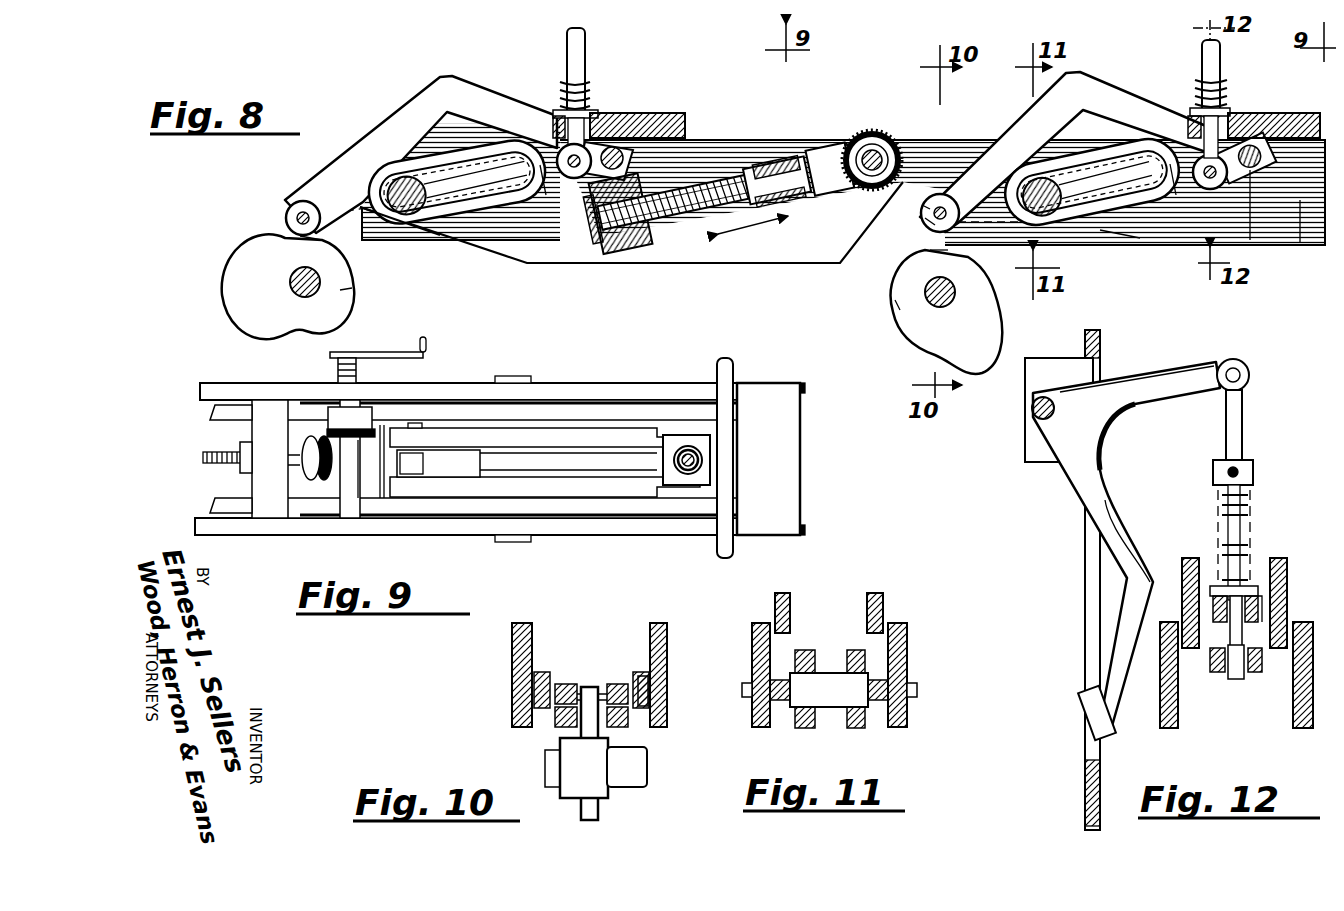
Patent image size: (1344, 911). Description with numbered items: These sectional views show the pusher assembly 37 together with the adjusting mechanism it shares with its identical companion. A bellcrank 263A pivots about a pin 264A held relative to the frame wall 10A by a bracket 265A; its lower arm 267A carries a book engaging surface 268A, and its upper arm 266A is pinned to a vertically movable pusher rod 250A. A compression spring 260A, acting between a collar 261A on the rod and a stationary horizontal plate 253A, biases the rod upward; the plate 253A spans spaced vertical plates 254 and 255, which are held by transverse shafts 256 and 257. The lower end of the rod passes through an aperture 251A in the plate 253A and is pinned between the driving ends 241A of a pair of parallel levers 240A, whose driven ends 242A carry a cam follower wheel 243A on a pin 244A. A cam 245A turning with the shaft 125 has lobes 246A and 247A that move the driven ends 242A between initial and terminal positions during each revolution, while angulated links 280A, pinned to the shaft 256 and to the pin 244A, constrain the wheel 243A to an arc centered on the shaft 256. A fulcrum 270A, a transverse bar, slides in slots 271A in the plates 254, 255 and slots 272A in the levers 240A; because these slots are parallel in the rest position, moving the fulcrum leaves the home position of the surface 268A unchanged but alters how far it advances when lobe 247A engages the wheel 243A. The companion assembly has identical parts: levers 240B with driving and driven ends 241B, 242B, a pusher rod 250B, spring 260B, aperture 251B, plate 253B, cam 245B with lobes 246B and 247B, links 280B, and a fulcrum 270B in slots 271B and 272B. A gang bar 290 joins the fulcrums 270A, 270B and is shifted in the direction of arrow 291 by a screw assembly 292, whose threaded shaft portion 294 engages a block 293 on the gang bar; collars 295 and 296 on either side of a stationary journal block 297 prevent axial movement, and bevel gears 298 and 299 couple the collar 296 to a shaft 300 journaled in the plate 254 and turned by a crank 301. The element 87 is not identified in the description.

In FIG. 12, the frame wall 10A is at (1093, 345).
In FIG. 12, the pusher assembly 37 is at (1065, 540).
In FIG. 8, the shaft bore 87 is at (291, 283).
In FIG. 8, the shaft 125 is at (945, 305).
In FIG. 10, the shaft 125 is at (640, 768).
In FIG. 8, the parallel levers 240A is at (1106, 220).
In FIG. 9, the parallel levers 240A is at (615, 477).
In FIG. 11, the parallel levers 240A is at (846, 728).
In FIG. 8, the parallel levers 240B is at (475, 215).
In FIG. 8, the driving ends 241A is at (1180, 200).
In FIG. 9, the driving ends 241A is at (688, 435).
In FIG. 12, the driving ends 241A is at (1245, 675).
In FIG. 8, the driving ends 241B is at (556, 202).
In FIG. 8, the driven ends 242A is at (940, 233).
In FIG. 9, the driven ends 242A is at (382, 518).
In FIG. 10, the driven ends 242A is at (592, 672).
In FIG. 8, the driven ends 242B is at (305, 202).
In FIG. 8, the cam follower wheel 243A is at (933, 215).
In FIG. 9, the cam follower wheel 243A is at (430, 463).
In FIG. 10, the cam follower wheel 243A is at (580, 725).
In FIG. 8, the pin 244A is at (925, 218).
In FIG. 9, the pin 244A is at (412, 423).
In FIG. 10, the pin 244A is at (650, 700).
In FIG. 8, the cam 245A is at (905, 308).
In FIG. 10, the cam 245A is at (600, 812).
In FIG. 8, the cam 245B is at (340, 290).
In FIG. 8, the cam lobe 246A is at (898, 242).
In FIG. 8, the cam lobe 246B is at (355, 266).
In FIG. 8, the cam lobe 247A is at (968, 375).
In FIG. 8, the cam lobe 247B is at (222, 288).
In FIG. 8, the pusher rod 250A is at (1222, 52).
In FIG. 9, the pusher rod 250A is at (703, 460).
In FIG. 12, the pusher rod 250A is at (1240, 430).
In FIG. 8, the pusher rod 250B is at (585, 60).
In FIG. 8, the aperture 251A is at (1232, 120).
In FIG. 12, the aperture 251A is at (1292, 596).
In FIG. 8, the aperture 251B is at (591, 116).
In FIG. 8, the horizontal plate 253A is at (1295, 112).
In FIG. 9, the horizontal plate 253A is at (790, 440).
In FIG. 12, the horizontal plate 253A is at (1288, 612).
In FIG. 8, the horizontal plate 253B is at (686, 115).
In FIG. 8, the vertical plate 254 is at (1300, 225).
In FIG. 9, the vertical plate 254 is at (560, 383).
In FIG. 10, the vertical plate 254 is at (662, 730).
In FIG. 11, the vertical plate 254 is at (900, 728).
In FIG. 12, the vertical plate 254 is at (1303, 730).
In FIG. 9, the vertical plate 255 is at (265, 535).
In FIG. 10, the vertical plate 255 is at (512, 702).
In FIG. 11, the vertical plate 255 is at (760, 728).
In FIG. 12, the vertical plate 255 is at (1168, 730).
In FIG. 8, the transverse shaft 256 is at (1258, 180).
In FIG. 9, the transverse shaft 256 is at (732, 366).
In FIG. 8, the transverse shaft 257 is at (656, 112).
In FIG. 8, the compression spring 260A is at (1200, 60).
In FIG. 9, the compression spring 260A is at (712, 470).
In FIG. 12, the compression spring 260A is at (1252, 492).
In FIG. 8, the compression spring 260B is at (584, 46).
In FIG. 12, the collar 261A is at (1254, 470).
In FIG. 12, the bellcrank 263A is at (1073, 468).
In FIG. 12, the pin 264A is at (1056, 407).
In FIG. 12, the bracket 265A is at (1028, 452).
In FIG. 12, the upper arm 266A is at (1175, 378).
In FIG. 12, the lower arm 267A is at (1140, 560).
In FIG. 12, the book engaging surface 268A is at (1092, 705).
In FIG. 8, the fulcrum 270A is at (1042, 215).
In FIG. 9, the fulcrum 270A is at (512, 376).
In FIG. 11, the fulcrum 270A is at (831, 690).
In FIG. 8, the fulcrum 270B is at (405, 205).
In FIG. 8, the slot 271A is at (1150, 175).
In FIG. 11, the slot 271A is at (752, 690).
In FIG. 8, the slot 271B is at (505, 200).
In FIG. 8, the slot 272A is at (1098, 215).
In FIG. 11, the slot 272A is at (845, 670).
In FIG. 8, the slot 272B is at (458, 172).
In FIG. 8, the parallel links 280A is at (1108, 100).
In FIG. 9, the parallel links 280A is at (705, 418).
In FIG. 10, the parallel links 280A is at (557, 684).
In FIG. 11, the parallel links 280A is at (866, 606).
In FIG. 12, the parallel links 280A is at (1200, 568).
In FIG. 8, the parallel links 280B is at (455, 90).
In FIG. 8, the gang bar 290 is at (697, 265).
In FIG. 9, the gang bar 290 is at (228, 418).
In FIG. 10, the gang bar 290 is at (532, 686).
In FIG. 11, the gang bar 290 is at (775, 672).
In FIG. 8, the arrow 291 is at (760, 233).
In FIG. 8, the screw assembly 292 is at (700, 192).
In FIG. 9, the screw assembly 292 is at (214, 460).
In FIG. 8, the block 293 is at (628, 254).
In FIG. 8, the threaded shaft portion 294 is at (586, 228).
In FIG. 9, the threaded shaft portion 294 is at (240, 470).
In FIG. 8, the collar 295 is at (776, 148).
In FIG. 9, the collar 295 is at (284, 458).
In FIG. 8, the collar 296 is at (838, 152).
In FIG. 9, the collar 296 is at (300, 462).
In FIG. 8, the journal block 297 is at (792, 150).
In FIG. 9, the journal block 297 is at (268, 405).
In FIG. 8, the bevel gear 298 is at (853, 135).
In FIG. 9, the bevel gear 298 is at (348, 518).
In FIG. 8, the bevel gear 299 is at (900, 138).
In FIG. 9, the bevel gear 299 is at (351, 422).
In FIG. 8, the shaft 300 is at (876, 148).
In FIG. 9, the shaft 300 is at (360, 518).
In FIG. 9, the crank 301 is at (392, 360).